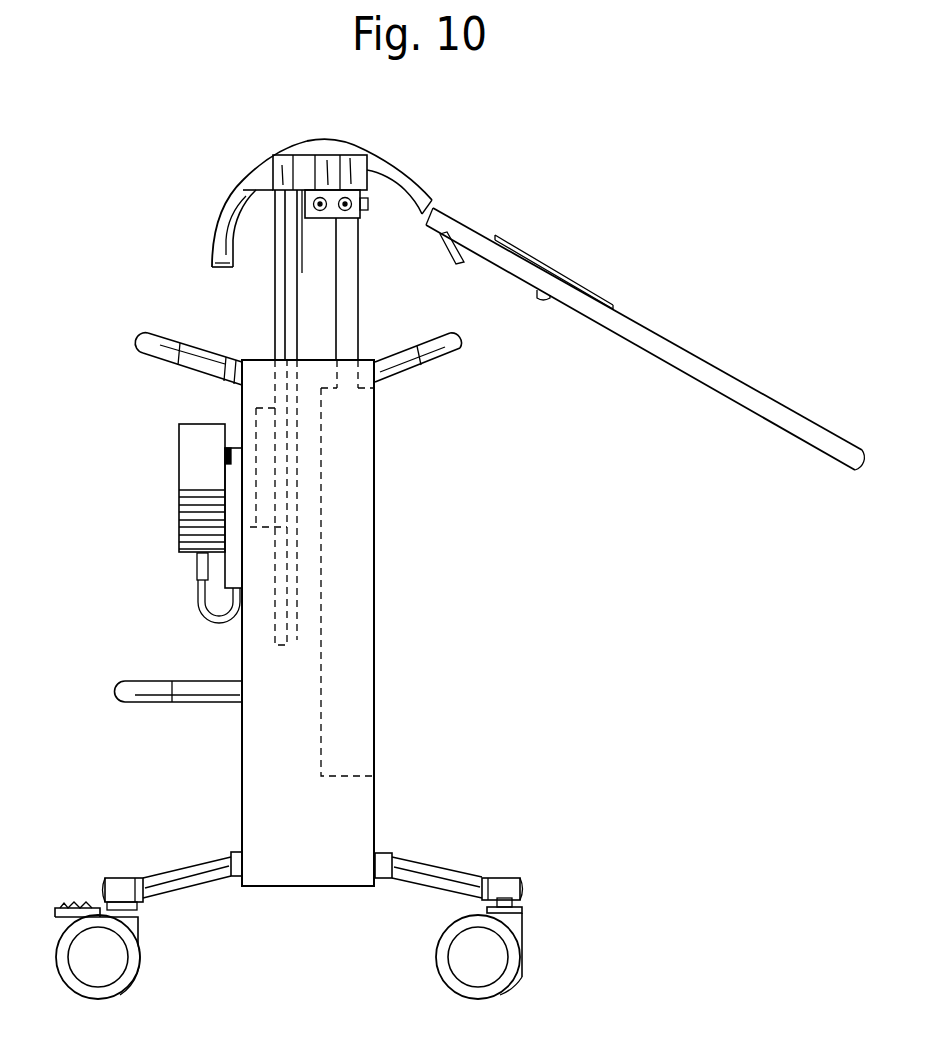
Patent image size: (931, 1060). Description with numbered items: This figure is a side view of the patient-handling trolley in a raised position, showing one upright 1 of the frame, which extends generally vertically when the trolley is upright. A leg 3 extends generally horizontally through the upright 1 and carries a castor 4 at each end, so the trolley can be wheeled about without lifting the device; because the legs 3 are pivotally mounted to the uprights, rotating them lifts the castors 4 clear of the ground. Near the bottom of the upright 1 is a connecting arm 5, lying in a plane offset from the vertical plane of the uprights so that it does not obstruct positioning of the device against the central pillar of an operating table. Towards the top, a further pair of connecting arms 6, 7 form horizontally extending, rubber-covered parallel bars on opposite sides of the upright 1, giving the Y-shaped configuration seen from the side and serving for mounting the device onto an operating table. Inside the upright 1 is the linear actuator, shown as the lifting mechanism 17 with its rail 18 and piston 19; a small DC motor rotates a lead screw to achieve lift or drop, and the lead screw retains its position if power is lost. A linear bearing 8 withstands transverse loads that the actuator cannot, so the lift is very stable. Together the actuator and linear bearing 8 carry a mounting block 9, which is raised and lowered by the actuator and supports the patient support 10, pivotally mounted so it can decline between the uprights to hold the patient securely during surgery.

The upright 1 is at (376, 650).
The leg 3 is at (443, 867).
The castor 4 is at (512, 975).
The connecting arm 5 is at (120, 700).
The connecting arm 6 is at (133, 344).
The connecting arm 7 is at (462, 353).
The linear bearing 8 is at (258, 406).
The mounting block 9 is at (341, 145).
The patient support 10 is at (421, 179).
The lifting mechanism 17 is at (359, 503).
The rail 18 is at (272, 267).
The piston 19 is at (362, 304).